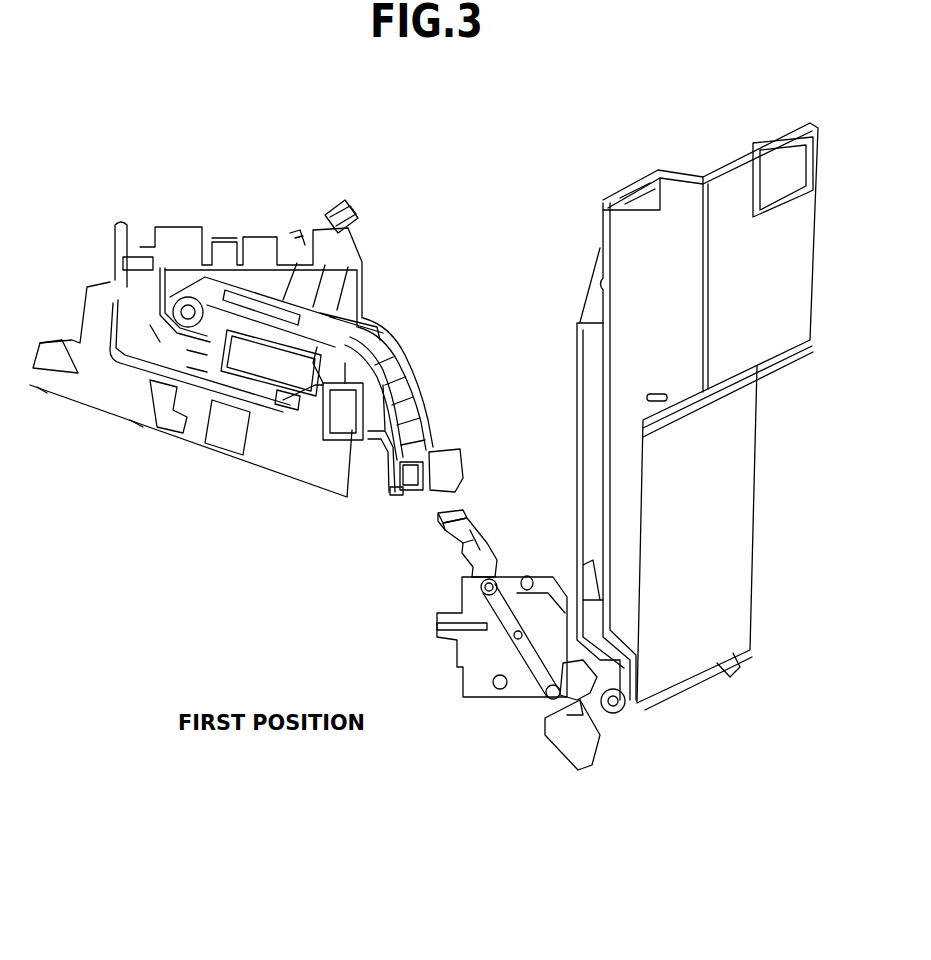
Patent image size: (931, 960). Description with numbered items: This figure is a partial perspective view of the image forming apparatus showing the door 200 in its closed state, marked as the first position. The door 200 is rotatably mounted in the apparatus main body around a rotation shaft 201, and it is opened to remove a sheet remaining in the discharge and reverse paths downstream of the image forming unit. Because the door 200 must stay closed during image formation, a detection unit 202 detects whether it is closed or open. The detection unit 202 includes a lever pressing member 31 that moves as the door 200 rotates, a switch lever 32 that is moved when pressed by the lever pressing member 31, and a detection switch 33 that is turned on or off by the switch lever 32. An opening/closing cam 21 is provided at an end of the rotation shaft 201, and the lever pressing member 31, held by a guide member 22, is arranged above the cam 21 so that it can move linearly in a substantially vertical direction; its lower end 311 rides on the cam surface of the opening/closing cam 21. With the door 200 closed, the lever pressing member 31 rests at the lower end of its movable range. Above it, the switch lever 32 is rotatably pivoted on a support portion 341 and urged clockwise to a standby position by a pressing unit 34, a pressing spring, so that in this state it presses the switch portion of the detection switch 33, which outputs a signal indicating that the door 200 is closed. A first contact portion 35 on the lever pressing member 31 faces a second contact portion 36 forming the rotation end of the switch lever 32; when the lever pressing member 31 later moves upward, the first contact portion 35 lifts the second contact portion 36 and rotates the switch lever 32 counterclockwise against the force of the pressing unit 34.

The door 200 is at (810, 330).
The rotation shaft 201 is at (622, 713).
The detection unit 202 is at (152, 458).
The opening/closing cam 21 is at (606, 742).
The guide member 22 is at (480, 700).
The lever pressing member 31 is at (473, 553).
The lower end 311 is at (552, 715).
The switch lever 32 is at (390, 458).
The detection switch 33 is at (273, 367).
The pressing unit 34 is at (337, 282).
The support portion 341 is at (183, 298).
The first contact portion 35 is at (465, 510).
The second contact portion 36 is at (442, 488).